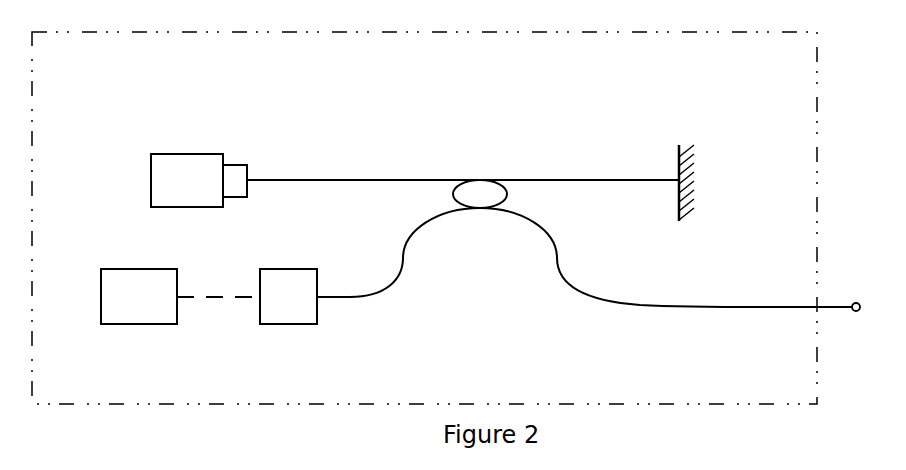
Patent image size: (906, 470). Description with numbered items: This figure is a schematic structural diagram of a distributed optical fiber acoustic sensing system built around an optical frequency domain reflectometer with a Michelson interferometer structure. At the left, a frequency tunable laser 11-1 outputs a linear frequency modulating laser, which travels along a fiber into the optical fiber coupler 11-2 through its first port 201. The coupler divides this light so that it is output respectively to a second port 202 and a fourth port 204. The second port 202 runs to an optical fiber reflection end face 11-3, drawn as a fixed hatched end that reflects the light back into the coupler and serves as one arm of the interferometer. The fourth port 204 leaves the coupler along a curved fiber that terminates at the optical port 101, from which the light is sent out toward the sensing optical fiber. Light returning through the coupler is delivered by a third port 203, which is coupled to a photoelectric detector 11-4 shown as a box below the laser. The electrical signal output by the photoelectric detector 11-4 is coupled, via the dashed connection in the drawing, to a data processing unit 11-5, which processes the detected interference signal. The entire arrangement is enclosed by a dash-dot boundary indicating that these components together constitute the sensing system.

The frequency tunable laser 11-1 is at (250, 150).
The optical fiber coupler 11-2 is at (507, 173).
The optical fiber reflection end face 11-3 is at (693, 140).
The photoelectric detector 11-4 is at (302, 267).
The data processing unit 11-5 is at (115, 268).
The first port 201 is at (363, 168).
The second port 202 is at (579, 168).
The third port 203 is at (398, 252).
The fourth port 204 is at (666, 257).
The optical port 101 is at (874, 308).